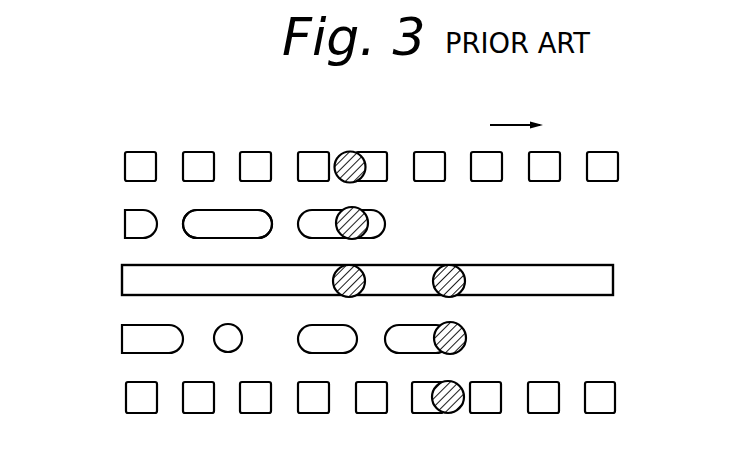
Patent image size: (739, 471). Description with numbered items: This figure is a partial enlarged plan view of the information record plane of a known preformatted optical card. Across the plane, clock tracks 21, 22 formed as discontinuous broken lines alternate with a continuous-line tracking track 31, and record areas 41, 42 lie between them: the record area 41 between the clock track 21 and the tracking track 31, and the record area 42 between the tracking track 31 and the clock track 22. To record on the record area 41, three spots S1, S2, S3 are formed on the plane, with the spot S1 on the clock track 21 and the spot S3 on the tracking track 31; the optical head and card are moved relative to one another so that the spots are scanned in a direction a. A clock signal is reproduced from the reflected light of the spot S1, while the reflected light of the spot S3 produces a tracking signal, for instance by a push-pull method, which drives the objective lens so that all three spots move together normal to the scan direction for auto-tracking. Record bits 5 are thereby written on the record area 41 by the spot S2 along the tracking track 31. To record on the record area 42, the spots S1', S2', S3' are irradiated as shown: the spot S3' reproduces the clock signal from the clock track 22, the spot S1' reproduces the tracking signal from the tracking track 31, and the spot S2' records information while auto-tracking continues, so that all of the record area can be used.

The clock track 21 is at (98, 185).
The clock track 22 is at (98, 416).
The tracking track 31 is at (98, 301).
The record area 41 is at (628, 181).
The record area 42 is at (628, 302).
The record bits 5 is at (229, 210).
The spot S1 is at (359, 137).
The spot S2 is at (374, 213).
The spot S3 is at (374, 259).
The spot S1' is at (472, 262).
The spot S2' is at (478, 329).
The spot S3' is at (477, 376).
The scan direction a is at (516, 109).